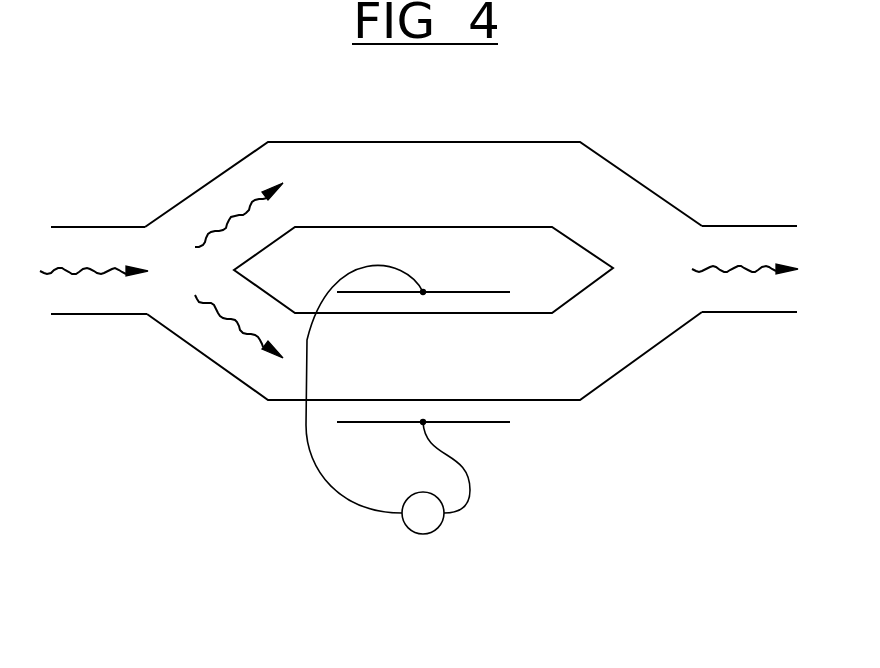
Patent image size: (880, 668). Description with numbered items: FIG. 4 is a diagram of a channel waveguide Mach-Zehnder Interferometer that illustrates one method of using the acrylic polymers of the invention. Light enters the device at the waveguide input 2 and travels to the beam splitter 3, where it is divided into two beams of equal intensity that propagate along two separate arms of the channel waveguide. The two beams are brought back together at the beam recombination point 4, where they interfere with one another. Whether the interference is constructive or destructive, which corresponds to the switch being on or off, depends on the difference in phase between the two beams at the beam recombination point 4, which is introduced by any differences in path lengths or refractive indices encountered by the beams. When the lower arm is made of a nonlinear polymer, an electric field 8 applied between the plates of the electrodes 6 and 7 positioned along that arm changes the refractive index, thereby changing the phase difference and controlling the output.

The waveguide input 2 is at (108, 317).
The beam splitter 3 is at (190, 270).
The beam recombination point 4 is at (740, 313).
The electrode 6 is at (497, 425).
The electrode 7 is at (485, 292).
The electric field 8 is at (424, 535).